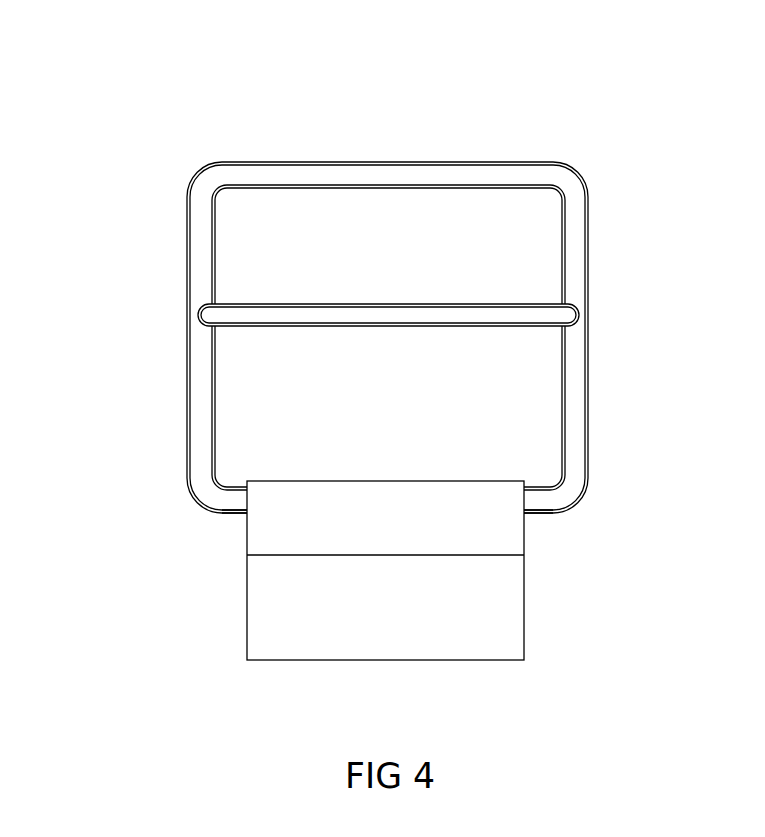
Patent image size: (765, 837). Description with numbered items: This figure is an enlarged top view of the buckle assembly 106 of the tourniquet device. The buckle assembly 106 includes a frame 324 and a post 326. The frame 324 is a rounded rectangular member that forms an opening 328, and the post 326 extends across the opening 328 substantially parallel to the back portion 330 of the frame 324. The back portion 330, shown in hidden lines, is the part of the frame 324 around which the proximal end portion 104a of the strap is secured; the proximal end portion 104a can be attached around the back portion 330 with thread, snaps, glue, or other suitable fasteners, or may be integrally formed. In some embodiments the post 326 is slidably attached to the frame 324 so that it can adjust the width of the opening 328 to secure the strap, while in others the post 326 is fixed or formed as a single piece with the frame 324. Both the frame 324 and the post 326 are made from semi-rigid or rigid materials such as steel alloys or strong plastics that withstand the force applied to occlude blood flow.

The buckle assembly 106 is at (160, 95).
The frame 324 is at (196, 391).
The post 326 is at (514, 314).
The opening 328 is at (412, 233).
The back portion 330 is at (539, 506).
The proximal end portion 104a is at (273, 600).